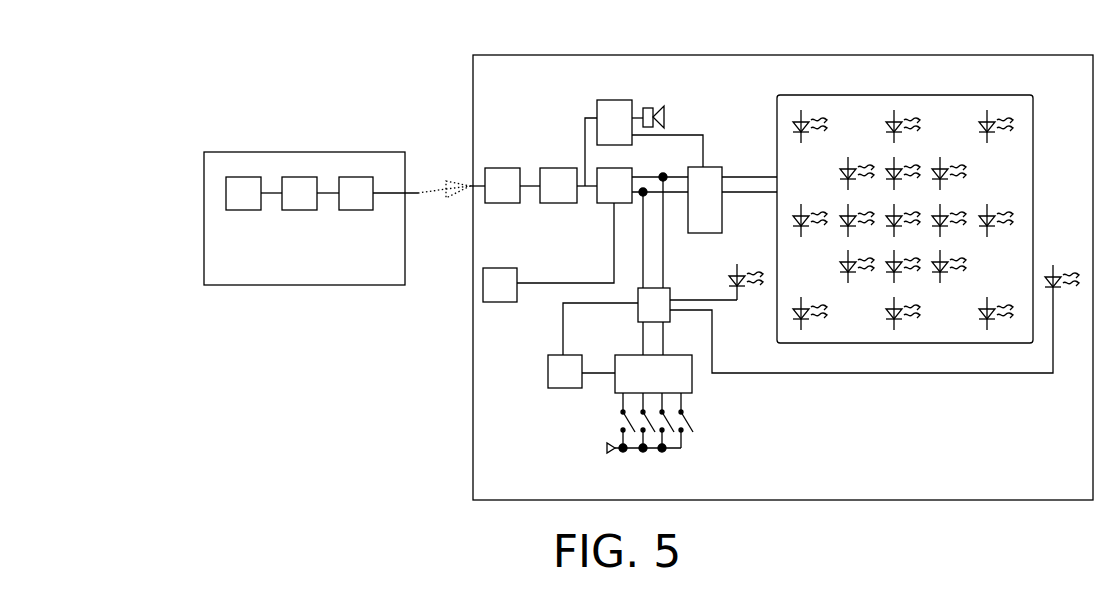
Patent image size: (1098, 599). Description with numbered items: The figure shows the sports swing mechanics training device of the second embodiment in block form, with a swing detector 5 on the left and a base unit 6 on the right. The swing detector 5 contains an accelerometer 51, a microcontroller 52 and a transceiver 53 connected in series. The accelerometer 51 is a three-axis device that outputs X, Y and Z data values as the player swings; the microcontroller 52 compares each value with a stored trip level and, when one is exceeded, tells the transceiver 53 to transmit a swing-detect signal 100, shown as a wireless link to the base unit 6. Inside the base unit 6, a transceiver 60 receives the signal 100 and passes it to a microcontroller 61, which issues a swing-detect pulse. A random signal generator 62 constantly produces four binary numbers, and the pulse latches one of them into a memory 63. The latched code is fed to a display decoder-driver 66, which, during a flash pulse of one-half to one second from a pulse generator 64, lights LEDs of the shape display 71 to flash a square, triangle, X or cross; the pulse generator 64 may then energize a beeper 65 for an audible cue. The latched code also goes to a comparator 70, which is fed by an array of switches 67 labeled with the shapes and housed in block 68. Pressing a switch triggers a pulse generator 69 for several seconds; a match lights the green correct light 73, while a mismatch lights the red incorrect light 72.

The swing detector 5 is at (315, 152).
The accelerometer 51 is at (243, 211).
The microcontroller 52 is at (296, 211).
The transceiver 53 is at (350, 211).
The swing-detect signal 100 is at (450, 173).
The base unit 6 is at (829, 55).
The transceiver 60 is at (502, 204).
The microcontroller 61 is at (557, 204).
The random signal generator 62 is at (500, 303).
The memory 63 is at (605, 204).
The pulse generator 64 is at (597, 100).
The beeper 65 is at (649, 107).
The display decoder-driver 66 is at (715, 167).
The array of switches 67 is at (621, 413).
The switch module 68 is at (692, 378).
The pulse generator 69 is at (548, 376).
The comparator 70 is at (667, 288).
The shape display 71 is at (770, 103).
The red incorrect light 72 is at (742, 296).
The green correct light 73 is at (1058, 293).